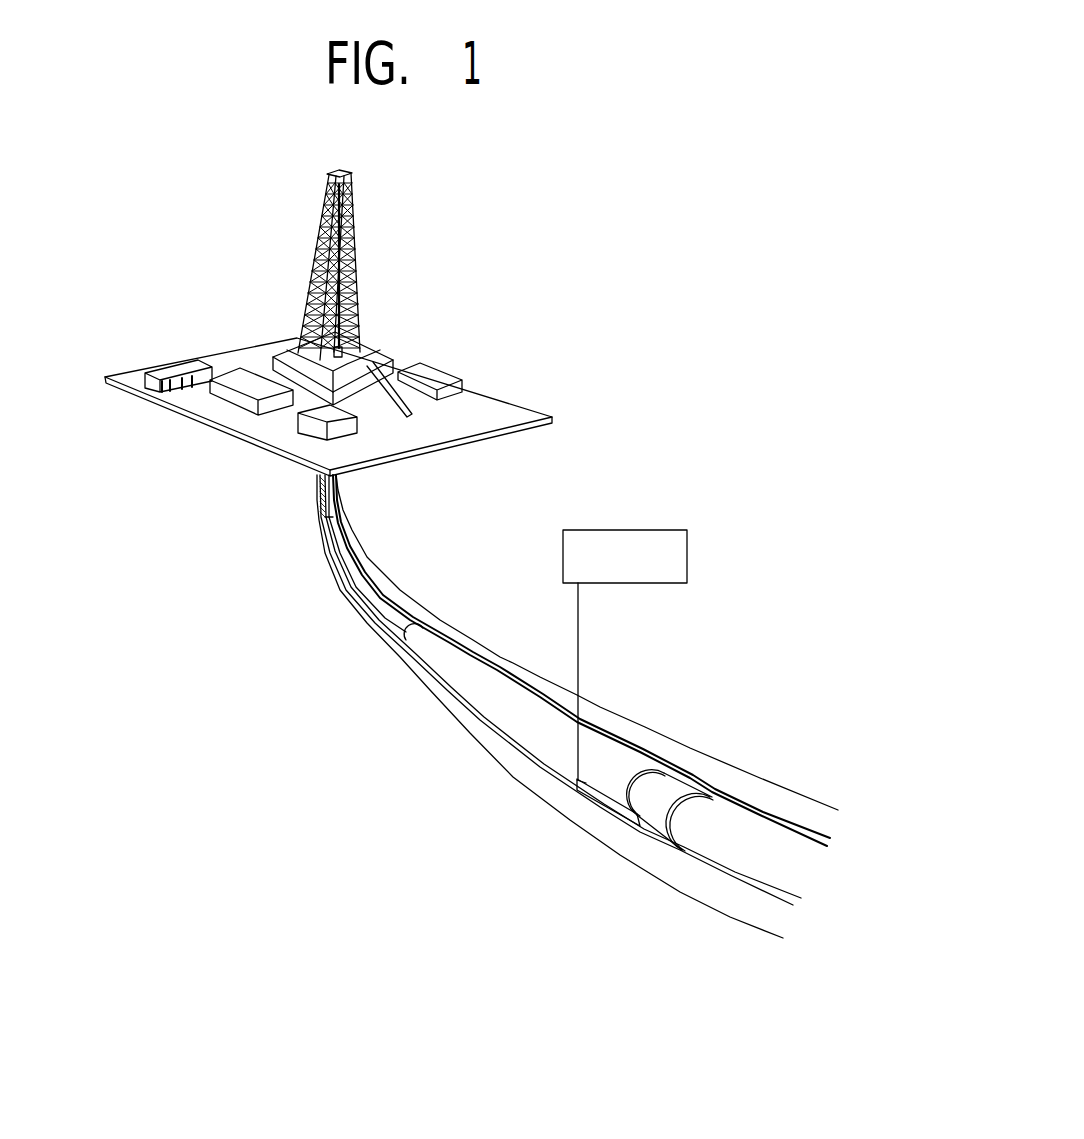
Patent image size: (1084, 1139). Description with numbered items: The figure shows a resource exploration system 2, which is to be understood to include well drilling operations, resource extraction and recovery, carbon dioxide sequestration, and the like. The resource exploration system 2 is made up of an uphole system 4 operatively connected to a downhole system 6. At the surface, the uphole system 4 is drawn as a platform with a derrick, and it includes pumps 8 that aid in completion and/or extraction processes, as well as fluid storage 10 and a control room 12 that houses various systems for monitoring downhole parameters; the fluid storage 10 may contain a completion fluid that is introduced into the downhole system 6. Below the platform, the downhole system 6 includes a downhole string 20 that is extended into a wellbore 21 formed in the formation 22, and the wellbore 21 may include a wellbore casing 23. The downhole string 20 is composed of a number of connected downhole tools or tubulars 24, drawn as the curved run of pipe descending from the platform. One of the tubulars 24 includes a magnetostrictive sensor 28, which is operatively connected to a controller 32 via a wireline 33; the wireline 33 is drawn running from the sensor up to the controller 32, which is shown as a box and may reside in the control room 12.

The resource exploration system 2 is at (620, 485).
The uphole system 4 is at (200, 252).
The downhole system 6 is at (292, 846).
The pumps 8 is at (232, 360).
The fluid storage 10 is at (417, 360).
The control room 12 is at (362, 443).
The downhole string 20 is at (247, 556).
The wellbore 21 is at (707, 858).
The formation 22 is at (346, 741).
The wellbore casing 23 is at (745, 802).
The tubulars 24 is at (492, 690).
The magnetostrictive sensor 28 is at (382, 624).
The controller 32 is at (692, 555).
The wireline 33 is at (580, 639).